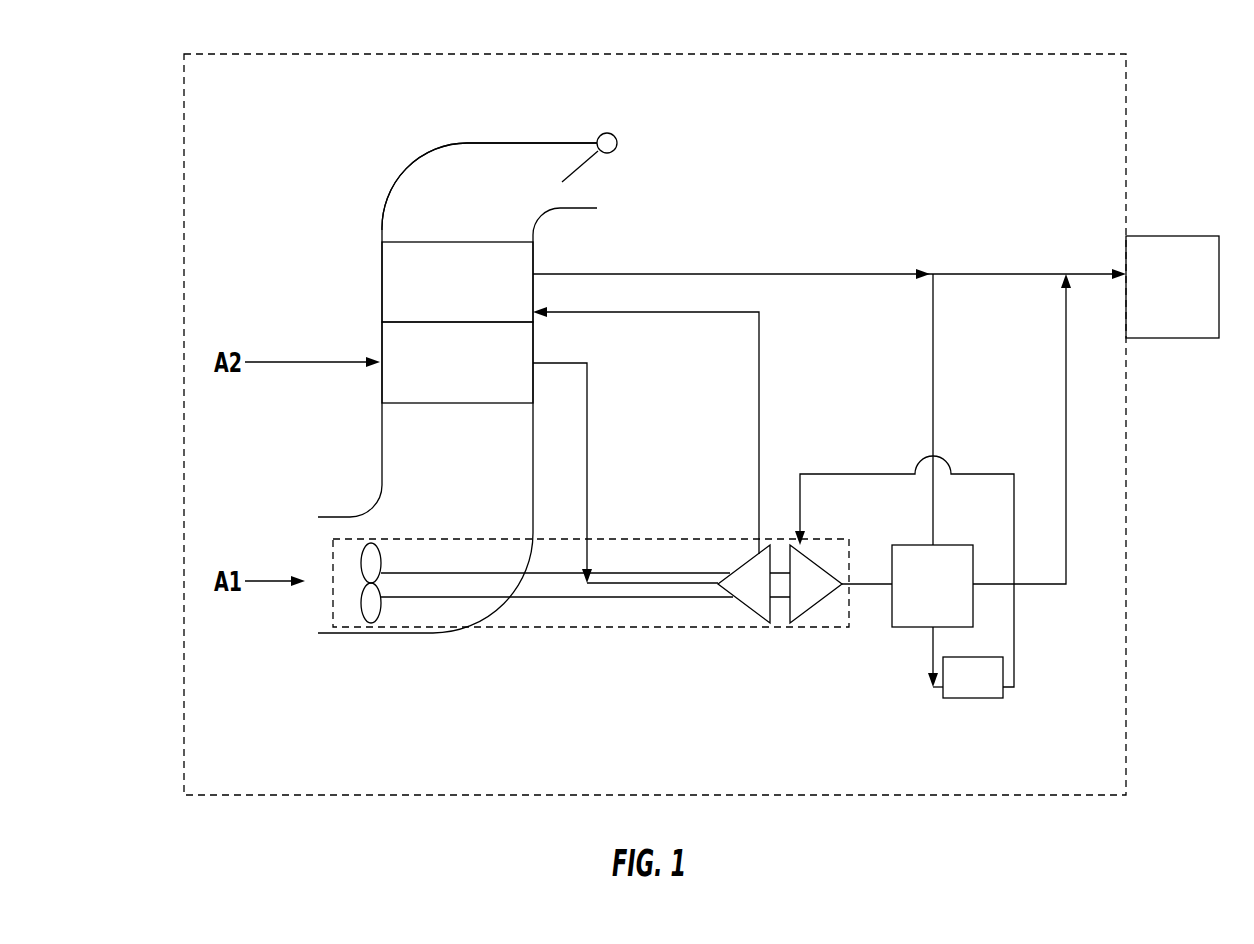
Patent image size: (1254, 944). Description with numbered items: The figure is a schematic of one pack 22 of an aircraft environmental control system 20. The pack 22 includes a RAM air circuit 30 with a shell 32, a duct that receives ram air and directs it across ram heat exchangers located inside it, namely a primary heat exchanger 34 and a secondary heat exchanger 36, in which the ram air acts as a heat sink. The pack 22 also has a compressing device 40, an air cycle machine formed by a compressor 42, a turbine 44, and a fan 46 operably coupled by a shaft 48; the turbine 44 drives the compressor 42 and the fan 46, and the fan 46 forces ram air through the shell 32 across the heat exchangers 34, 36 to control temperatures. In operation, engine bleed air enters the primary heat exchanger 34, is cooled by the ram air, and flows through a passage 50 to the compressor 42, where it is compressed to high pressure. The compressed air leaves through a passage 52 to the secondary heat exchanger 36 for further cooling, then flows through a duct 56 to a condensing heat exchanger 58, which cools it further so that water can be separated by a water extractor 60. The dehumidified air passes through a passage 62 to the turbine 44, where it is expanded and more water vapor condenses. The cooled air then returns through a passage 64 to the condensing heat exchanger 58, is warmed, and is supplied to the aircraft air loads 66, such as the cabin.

The environmental control system 20 is at (1130, 84).
The pack 22 is at (798, 147).
The RAM air circuit 30 is at (340, 494).
The shell 32 is at (428, 158).
The primary heat exchanger 34 is at (443, 378).
The secondary heat exchanger 36 is at (443, 297).
The compressing device 40 is at (618, 642).
The compressor 42 is at (752, 610).
The turbine 44 is at (805, 610).
The fan 46 is at (371, 612).
The shaft 48 is at (557, 583).
The passage 50 is at (587, 440).
The passage 52 is at (759, 413).
The duct 56 is at (933, 385).
The condensing heat exchanger 58 is at (953, 545).
The water extractor 60 is at (973, 698).
The passage 62 is at (858, 475).
The passage 64 is at (870, 584).
The air loads 66 is at (1160, 331).